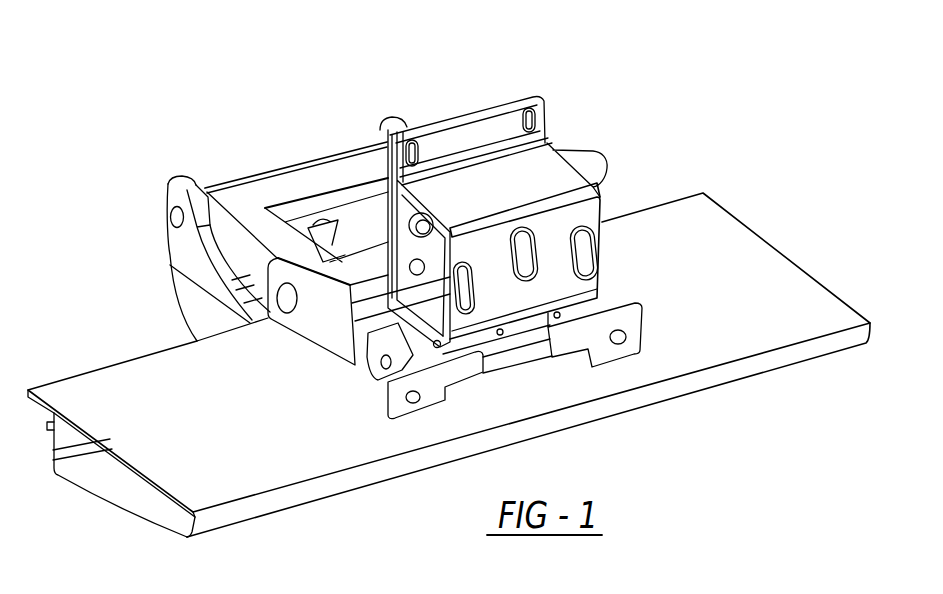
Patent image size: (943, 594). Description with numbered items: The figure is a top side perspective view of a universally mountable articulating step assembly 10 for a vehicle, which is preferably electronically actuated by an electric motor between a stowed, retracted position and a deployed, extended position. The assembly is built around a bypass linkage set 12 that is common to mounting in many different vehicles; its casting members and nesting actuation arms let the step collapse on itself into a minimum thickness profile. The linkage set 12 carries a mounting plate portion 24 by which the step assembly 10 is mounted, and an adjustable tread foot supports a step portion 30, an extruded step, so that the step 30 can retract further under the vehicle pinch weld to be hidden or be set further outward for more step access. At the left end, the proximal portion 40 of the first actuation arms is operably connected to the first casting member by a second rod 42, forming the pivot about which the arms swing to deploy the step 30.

The articulating step assembly 10 is at (181, 79).
The bypass linkage set 12 is at (322, 151).
The mounting plate portion 24 is at (477, 105).
The step portion 30 is at (253, 468).
The proximal portion 40 is at (248, 182).
The second rod 42 is at (168, 216).